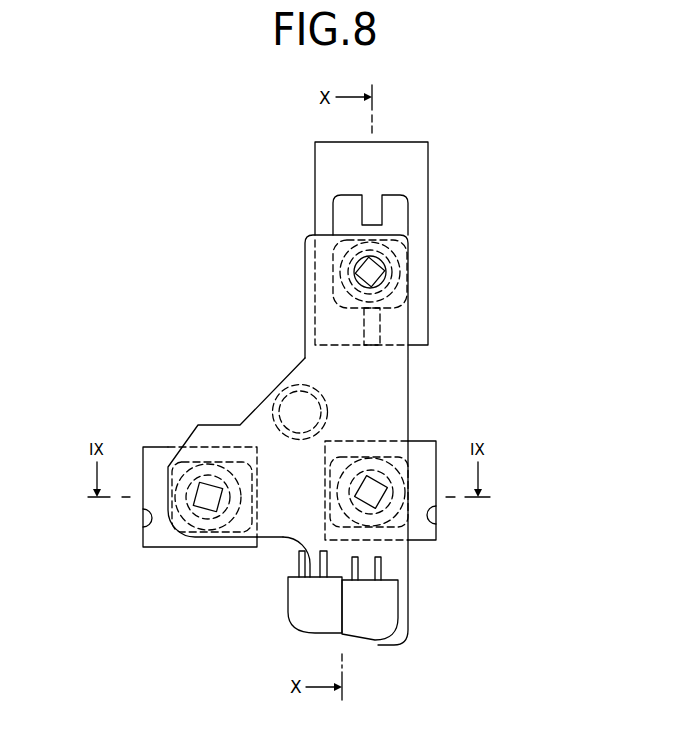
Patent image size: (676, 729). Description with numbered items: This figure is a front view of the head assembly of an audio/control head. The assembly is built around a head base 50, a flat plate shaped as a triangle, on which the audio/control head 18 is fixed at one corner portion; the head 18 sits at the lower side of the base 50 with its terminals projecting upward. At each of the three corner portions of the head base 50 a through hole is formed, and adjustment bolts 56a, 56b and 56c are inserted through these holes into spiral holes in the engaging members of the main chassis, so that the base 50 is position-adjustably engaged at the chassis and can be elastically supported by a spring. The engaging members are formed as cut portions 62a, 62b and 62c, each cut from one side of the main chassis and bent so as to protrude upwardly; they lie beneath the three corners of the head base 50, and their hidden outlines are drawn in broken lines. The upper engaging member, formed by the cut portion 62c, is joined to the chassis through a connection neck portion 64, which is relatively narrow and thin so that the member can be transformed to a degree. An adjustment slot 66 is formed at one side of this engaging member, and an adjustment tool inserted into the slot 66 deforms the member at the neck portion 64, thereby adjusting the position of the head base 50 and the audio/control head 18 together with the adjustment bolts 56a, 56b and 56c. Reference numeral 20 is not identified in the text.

The audio/control head 18 is at (385, 611).
The base member 20 is at (257, 370).
The head base 50 is at (286, 518).
The adjustment bolt 56a is at (374, 482).
The adjustment bolt 56b is at (208, 497).
The adjustment bolt 56c is at (377, 272).
The cut portion 62a is at (444, 531).
The cut portion 62b is at (143, 531).
The cut portion 62c is at (375, 143).
The connection neck portion 64 is at (372, 320).
The adjustment slot 66 is at (370, 213).